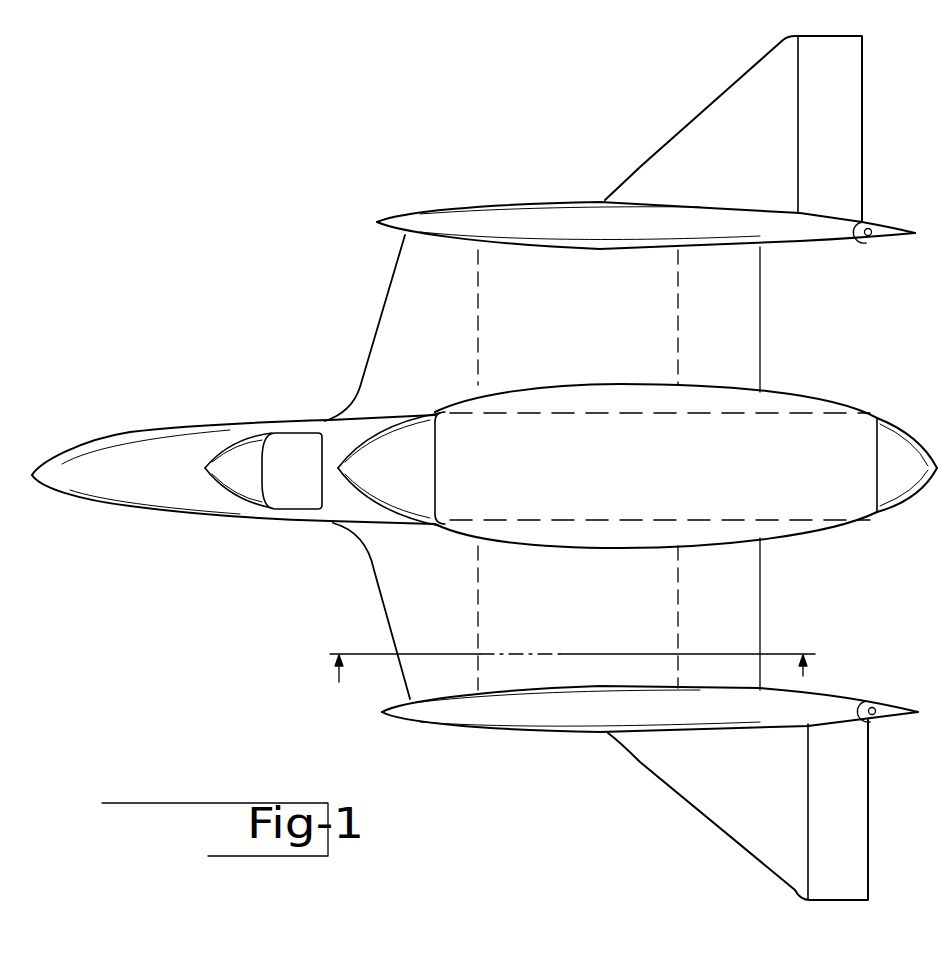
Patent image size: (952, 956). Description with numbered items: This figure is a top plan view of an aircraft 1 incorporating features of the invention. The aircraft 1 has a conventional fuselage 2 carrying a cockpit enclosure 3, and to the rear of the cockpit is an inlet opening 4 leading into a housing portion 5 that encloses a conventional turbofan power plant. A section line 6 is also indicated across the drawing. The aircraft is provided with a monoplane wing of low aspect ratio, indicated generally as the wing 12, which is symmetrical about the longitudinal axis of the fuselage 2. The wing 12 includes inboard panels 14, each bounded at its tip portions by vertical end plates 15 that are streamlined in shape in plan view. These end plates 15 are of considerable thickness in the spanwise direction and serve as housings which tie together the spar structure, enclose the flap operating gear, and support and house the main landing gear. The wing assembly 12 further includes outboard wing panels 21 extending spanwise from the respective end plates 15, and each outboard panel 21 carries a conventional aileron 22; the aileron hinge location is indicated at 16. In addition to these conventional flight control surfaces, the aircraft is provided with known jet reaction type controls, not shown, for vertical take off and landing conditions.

The aircraft 1 is at (135, 418).
The fuselage 2 is at (190, 430).
The cockpit enclosure 3 is at (212, 478).
The inlet opening 4 is at (358, 480).
The housing portion 5 is at (626, 482).
The section line 6- 6 is at (572, 652).
The monoplane wing 12 is at (342, 557).
The inboard panels 14 is at (376, 585).
The vertical end plates 15 is at (452, 212).
The hinge 16 is at (882, 236).
The outboard wing panels 21 is at (712, 106).
The aileron 22 is at (865, 128).